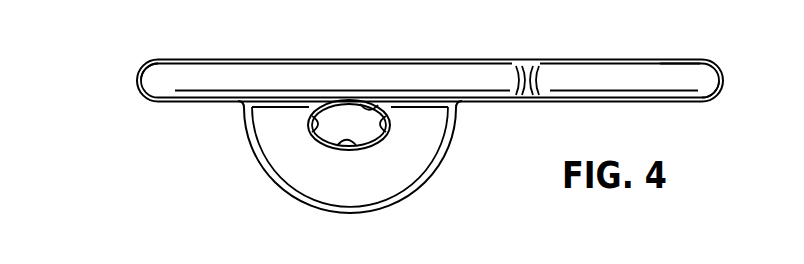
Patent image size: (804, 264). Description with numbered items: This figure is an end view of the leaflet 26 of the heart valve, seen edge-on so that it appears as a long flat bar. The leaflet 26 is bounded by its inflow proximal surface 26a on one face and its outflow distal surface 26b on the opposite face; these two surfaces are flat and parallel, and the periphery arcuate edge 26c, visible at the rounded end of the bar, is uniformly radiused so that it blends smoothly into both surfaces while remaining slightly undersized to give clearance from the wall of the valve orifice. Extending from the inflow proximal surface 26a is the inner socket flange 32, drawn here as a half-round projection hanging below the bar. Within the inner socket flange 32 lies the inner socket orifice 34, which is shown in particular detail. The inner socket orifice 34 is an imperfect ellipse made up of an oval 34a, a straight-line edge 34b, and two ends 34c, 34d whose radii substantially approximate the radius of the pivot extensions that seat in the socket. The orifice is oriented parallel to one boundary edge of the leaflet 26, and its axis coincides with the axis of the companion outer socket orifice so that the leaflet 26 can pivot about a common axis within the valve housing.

The leaflet 26 is at (566, 63).
The inflow proximal surface 26a is at (680, 101).
The outflow distal surface 26b is at (662, 61).
The periphery arcuate edge 26c is at (139, 77).
The inner socket flange 32 is at (284, 190).
The inner socket orifice 34 is at (368, 132).
The oval 34a is at (342, 145).
The straight-line edge 34b is at (370, 105).
The end of inner socket orifice 34c is at (386, 127).
The end of inner socket orifice 34d is at (318, 125).